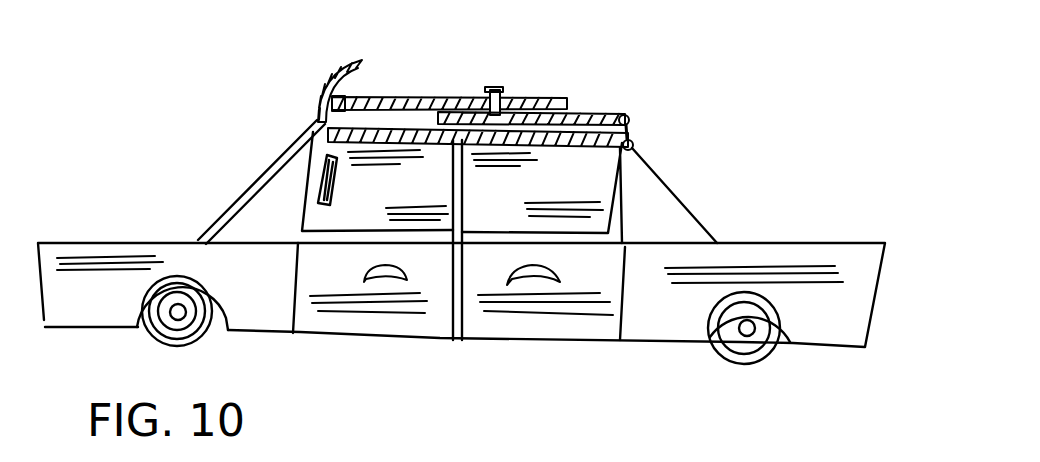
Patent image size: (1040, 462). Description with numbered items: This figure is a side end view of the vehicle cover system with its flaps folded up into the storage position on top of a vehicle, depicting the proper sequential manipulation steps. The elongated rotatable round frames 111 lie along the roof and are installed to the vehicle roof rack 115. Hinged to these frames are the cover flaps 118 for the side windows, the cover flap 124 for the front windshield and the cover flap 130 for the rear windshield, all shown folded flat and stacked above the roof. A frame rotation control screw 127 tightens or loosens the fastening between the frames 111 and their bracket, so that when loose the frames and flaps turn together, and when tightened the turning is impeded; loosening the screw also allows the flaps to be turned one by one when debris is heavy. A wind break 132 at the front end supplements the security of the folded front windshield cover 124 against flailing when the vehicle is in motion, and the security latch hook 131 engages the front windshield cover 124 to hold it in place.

The wind break 132 is at (333, 72).
The frame rotation control screw 127 is at (337, 100).
The cover flaps for side windows 118 is at (410, 132).
The security latch hook 131 is at (502, 88).
The cover flap for front windshield 124 is at (567, 102).
The cover flap for rear windshield 130 is at (630, 118).
The elongated rotatable round frames 111 is at (630, 128).
The vehicle roof rack 115 is at (633, 147).